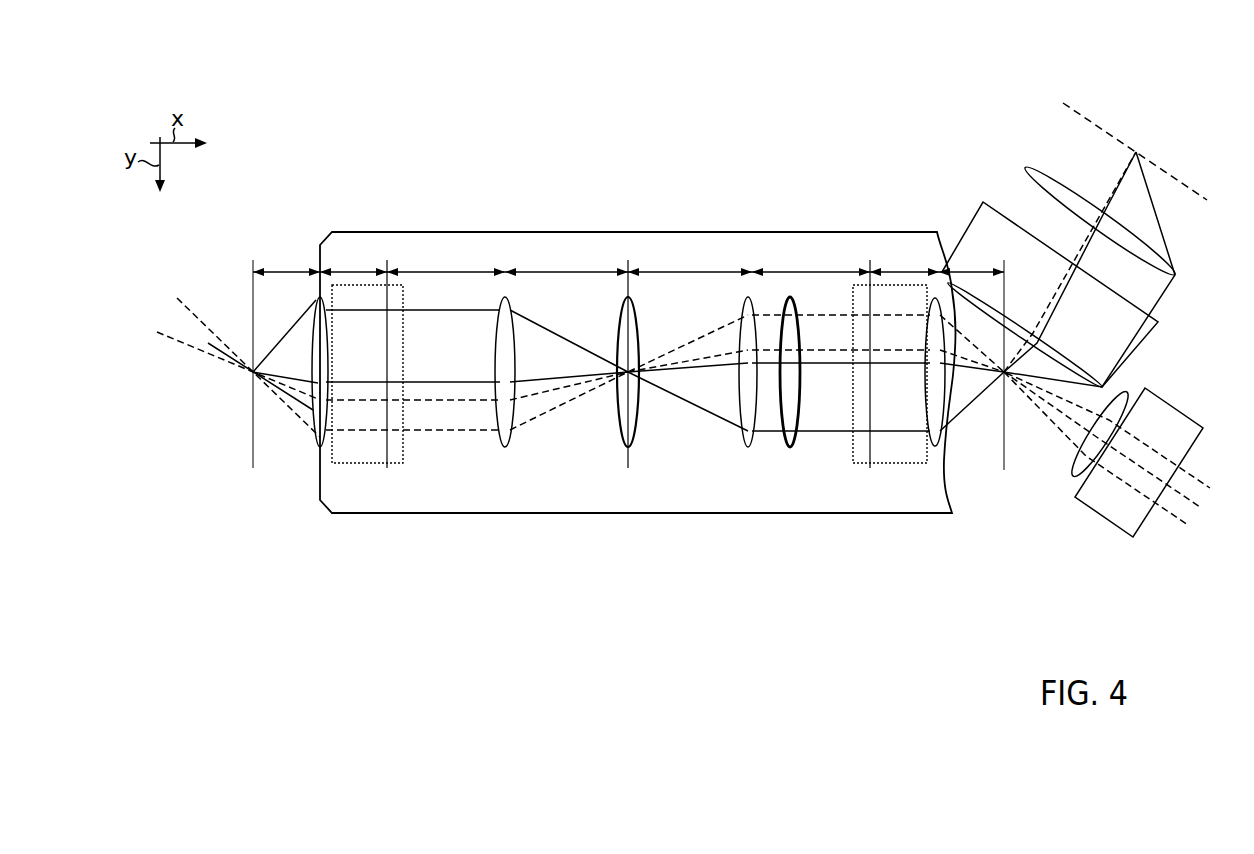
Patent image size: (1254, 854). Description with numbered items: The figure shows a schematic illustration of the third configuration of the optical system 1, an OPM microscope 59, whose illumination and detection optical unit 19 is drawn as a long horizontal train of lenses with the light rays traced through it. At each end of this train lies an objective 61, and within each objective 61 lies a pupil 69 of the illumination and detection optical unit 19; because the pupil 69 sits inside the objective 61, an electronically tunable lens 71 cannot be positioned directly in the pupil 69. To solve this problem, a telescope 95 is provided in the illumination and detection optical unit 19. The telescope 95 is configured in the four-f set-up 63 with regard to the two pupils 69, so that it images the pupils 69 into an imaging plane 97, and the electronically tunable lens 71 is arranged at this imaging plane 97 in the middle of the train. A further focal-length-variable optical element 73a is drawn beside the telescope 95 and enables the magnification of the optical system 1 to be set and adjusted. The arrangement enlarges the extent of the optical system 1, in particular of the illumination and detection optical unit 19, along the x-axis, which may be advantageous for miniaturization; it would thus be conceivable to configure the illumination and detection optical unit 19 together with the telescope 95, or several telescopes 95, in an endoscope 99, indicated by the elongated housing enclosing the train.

The optical system 1 is at (483, 90).
The OPM microscope 59 is at (483, 90).
The illumination and detection optical unit 19 is at (946, 589).
The objective 61 is at (402, 298).
The 4f set-up 63 is at (870, 225).
The pupil 69 is at (404, 296).
The electronically tunable lens 71 is at (637, 428).
The further focal-length-variable optical element 73a is at (785, 437).
The telescope 95 is at (754, 521).
The imaging plane 97 is at (630, 293).
The endoscope 99 is at (915, 514).